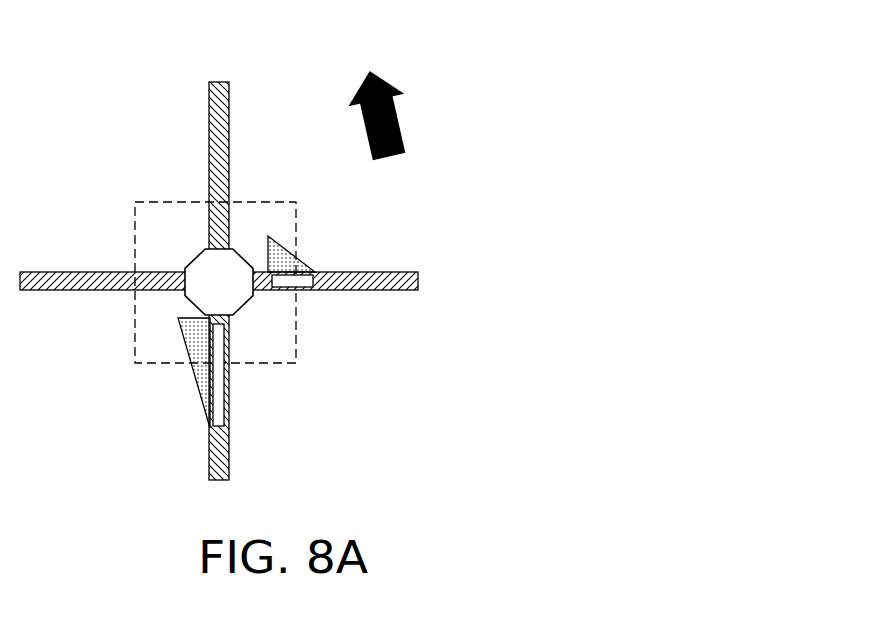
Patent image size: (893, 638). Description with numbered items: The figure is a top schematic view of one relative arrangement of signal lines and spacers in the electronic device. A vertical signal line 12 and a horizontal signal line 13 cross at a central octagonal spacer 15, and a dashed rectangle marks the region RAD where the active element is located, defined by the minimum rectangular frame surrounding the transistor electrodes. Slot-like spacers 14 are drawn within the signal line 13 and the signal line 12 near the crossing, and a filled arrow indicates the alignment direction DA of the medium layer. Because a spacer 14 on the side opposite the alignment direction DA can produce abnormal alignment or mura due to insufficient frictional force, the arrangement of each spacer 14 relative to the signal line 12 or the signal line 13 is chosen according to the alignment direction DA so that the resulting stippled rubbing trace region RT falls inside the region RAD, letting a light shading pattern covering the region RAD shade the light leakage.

The signal line 12 is at (220, 87).
The signal line 13 is at (420, 281).
The spacer 14 is at (218, 397).
The spacer 15 is at (202, 290).
The rubbing trace region RT is at (283, 252).
The region where the active element is located RAD is at (157, 200).
The alignment direction DA is at (380, 100).